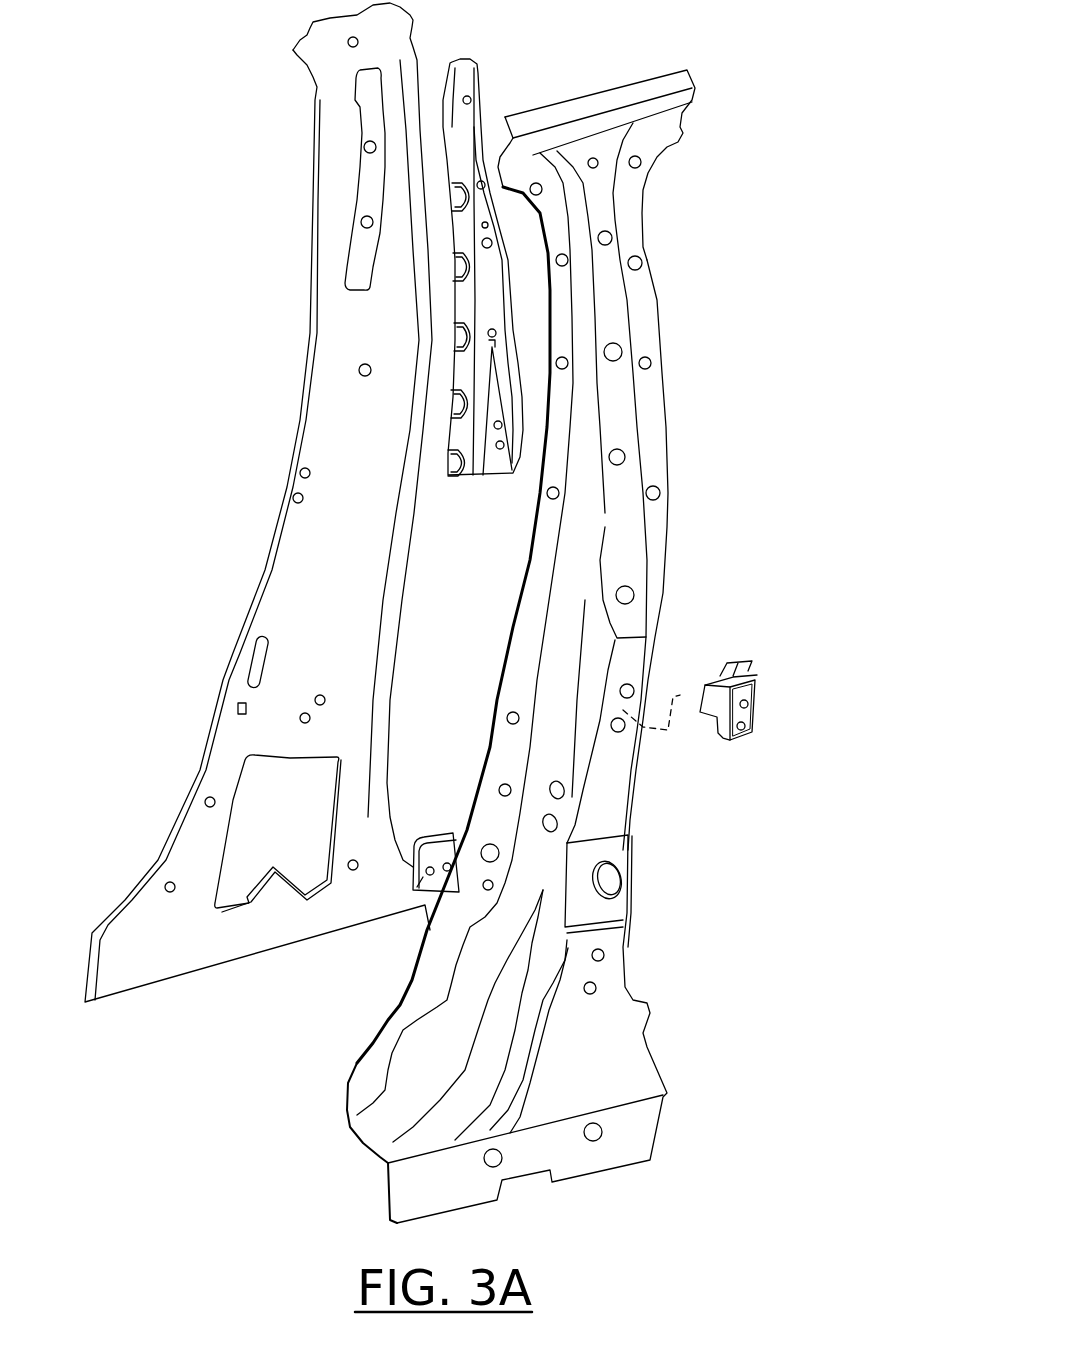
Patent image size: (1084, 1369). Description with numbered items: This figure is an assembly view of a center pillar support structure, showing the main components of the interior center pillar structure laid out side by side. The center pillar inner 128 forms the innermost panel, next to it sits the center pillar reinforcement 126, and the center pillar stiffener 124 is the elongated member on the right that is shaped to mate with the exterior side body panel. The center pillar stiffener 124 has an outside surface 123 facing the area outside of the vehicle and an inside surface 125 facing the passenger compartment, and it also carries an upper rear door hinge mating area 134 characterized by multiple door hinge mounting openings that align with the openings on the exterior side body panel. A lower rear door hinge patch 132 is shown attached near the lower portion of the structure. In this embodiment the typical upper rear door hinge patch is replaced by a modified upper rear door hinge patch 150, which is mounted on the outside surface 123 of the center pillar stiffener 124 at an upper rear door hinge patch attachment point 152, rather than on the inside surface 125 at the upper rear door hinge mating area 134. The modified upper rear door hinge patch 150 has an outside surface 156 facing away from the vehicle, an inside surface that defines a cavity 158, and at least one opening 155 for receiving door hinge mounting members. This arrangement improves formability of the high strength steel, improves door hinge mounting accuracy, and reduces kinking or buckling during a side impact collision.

The outside surface 123 is at (598, 1057).
The center pillar stiffener 124 is at (698, 398).
The inside surface 125 is at (483, 666).
The center pillar reinforcement 126 is at (498, 306).
The center pillar inner 128 is at (343, 381).
The lower rear door hinge patch 132 is at (423, 897).
The upper rear door hinge mating area 134 is at (660, 758).
The modified upper rear door hinge patch 150 is at (778, 729).
The upper rear door hinge patch attachment point 152 is at (663, 681).
The opening 155 is at (750, 735).
The outside surface 156 is at (723, 740).
The cavity 158 is at (749, 680).